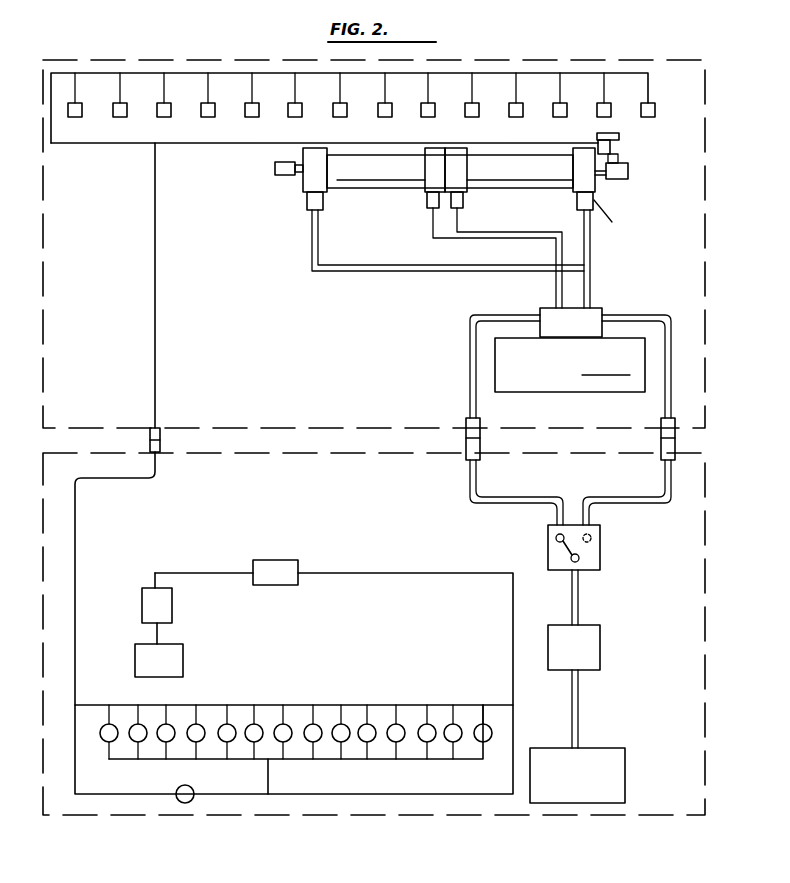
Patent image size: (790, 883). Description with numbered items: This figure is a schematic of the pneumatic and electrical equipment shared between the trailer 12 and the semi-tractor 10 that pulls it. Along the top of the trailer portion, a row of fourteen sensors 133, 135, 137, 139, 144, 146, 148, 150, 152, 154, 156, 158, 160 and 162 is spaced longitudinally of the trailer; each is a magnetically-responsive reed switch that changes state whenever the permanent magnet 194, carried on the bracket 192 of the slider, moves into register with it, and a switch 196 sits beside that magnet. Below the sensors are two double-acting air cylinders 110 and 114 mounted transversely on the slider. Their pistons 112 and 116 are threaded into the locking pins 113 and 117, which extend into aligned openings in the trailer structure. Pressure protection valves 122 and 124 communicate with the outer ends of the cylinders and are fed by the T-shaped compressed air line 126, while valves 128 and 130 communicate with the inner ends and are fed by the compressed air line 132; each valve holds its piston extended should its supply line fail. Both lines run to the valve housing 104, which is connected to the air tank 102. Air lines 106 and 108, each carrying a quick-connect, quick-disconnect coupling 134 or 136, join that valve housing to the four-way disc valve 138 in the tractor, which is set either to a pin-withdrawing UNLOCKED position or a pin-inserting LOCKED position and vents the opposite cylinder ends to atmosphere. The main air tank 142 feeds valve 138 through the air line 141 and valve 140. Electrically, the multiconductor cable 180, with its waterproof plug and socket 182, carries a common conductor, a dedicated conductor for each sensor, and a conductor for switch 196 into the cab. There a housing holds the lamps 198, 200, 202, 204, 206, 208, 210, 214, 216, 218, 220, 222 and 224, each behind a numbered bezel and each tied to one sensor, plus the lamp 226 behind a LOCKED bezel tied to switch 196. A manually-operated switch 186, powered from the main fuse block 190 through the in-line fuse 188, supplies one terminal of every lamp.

The semi-tractor 10 is at (706, 546).
The trailer 12 is at (684, 58).
The air tank 102 is at (572, 380).
The valve housing 104 is at (597, 316).
The air line 106 is at (468, 350).
The air line 108 is at (680, 292).
The double-acting air cylinder 110 is at (372, 178).
The piston 112 is at (300, 180).
The locking pin 113 is at (275, 172).
The double-acting air cylinder 114 is at (532, 175).
The piston 116 is at (619, 216).
The locking pin 117 is at (600, 185).
The pressure protection valve 122 is at (306, 206).
The pressure protection valve 124 is at (593, 205).
The compressed air line 126 is at (395, 275).
The pressure protection valve 128 is at (428, 205).
The pressure protection valve 130 is at (462, 205).
The compressed air line 132 is at (483, 243).
The sensor 133 is at (71, 117).
The quick-connect, quick-disconnect coupling 134 is at (466, 440).
The sensor 135 is at (116, 117).
The quick-connect, quick-disconnect coupling 136 is at (661, 440).
The sensor 137 is at (160, 117).
The four-way disc valve 138 is at (616, 546).
The sensor 139 is at (204, 117).
The valve 140 is at (600, 650).
The air line 141 is at (579, 604).
The main air tank 142 is at (625, 758).
The sensor 144 is at (254, 110).
The sensor 146 is at (297, 110).
The sensor 148 is at (342, 110).
The sensor 150 is at (387, 110).
The sensor 152 is at (430, 110).
The sensor 154 is at (474, 110).
The sensor 156 is at (518, 110).
The sensor 158 is at (562, 110).
The sensor 160 is at (606, 110).
The sensor 162 is at (655, 110).
The multiconductor cable 180 is at (156, 362).
The plug and socket 182 is at (160, 444).
The manually-operated switch 186 is at (278, 568).
The in-line fuse 188 is at (168, 605).
The main fuse block 190 is at (176, 660).
The bracket 192 is at (610, 147).
The permanent magnet 194 is at (619, 136).
The switch 196 is at (628, 168).
The lamp 198 is at (104, 741).
The lamp 200 is at (132, 724).
The lamp 202 is at (170, 724).
The lamp 204 is at (200, 741).
The lamp 206 is at (250, 700).
The lamp 208 is at (258, 724).
The lamp 210 is at (300, 741).
The lamp 214 is at (334, 728).
The lamp 216 is at (362, 741).
The lamp 218 is at (390, 728).
The lamp 220 is at (422, 741).
The lamp 222 is at (448, 728).
The lamp 224 is at (490, 740).
The lamp 226 is at (178, 785).